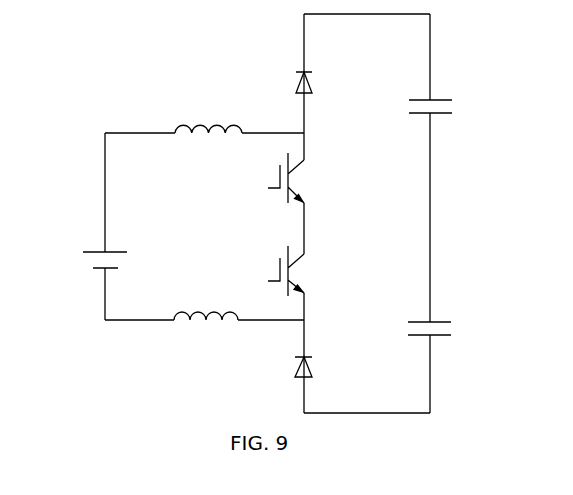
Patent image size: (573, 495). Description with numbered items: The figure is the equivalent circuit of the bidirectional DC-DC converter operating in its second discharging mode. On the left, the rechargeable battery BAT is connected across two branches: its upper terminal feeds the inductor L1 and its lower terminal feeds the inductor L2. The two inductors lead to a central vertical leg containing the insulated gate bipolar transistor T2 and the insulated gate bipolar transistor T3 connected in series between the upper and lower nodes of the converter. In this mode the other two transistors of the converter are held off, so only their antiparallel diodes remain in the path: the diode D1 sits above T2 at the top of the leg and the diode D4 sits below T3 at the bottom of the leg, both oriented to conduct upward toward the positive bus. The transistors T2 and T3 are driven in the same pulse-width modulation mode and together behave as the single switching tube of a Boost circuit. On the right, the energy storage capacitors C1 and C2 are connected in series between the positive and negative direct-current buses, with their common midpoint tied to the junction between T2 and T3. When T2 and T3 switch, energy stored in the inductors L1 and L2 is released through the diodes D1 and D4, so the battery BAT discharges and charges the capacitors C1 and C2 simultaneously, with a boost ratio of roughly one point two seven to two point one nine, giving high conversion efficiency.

The inductor L1 is at (208, 115).
The inductor L2 is at (206, 301).
The rechargeable battery BAT is at (81, 257).
The diode D1 is at (319, 78).
The diode D4 is at (318, 362).
The insulated gate bipolar transistor T2 is at (276, 178).
The insulated gate bipolar transistor T3 is at (276, 271).
The energy storage capacitor C1 is at (446, 106).
The energy storage capacitor C2 is at (445, 328).